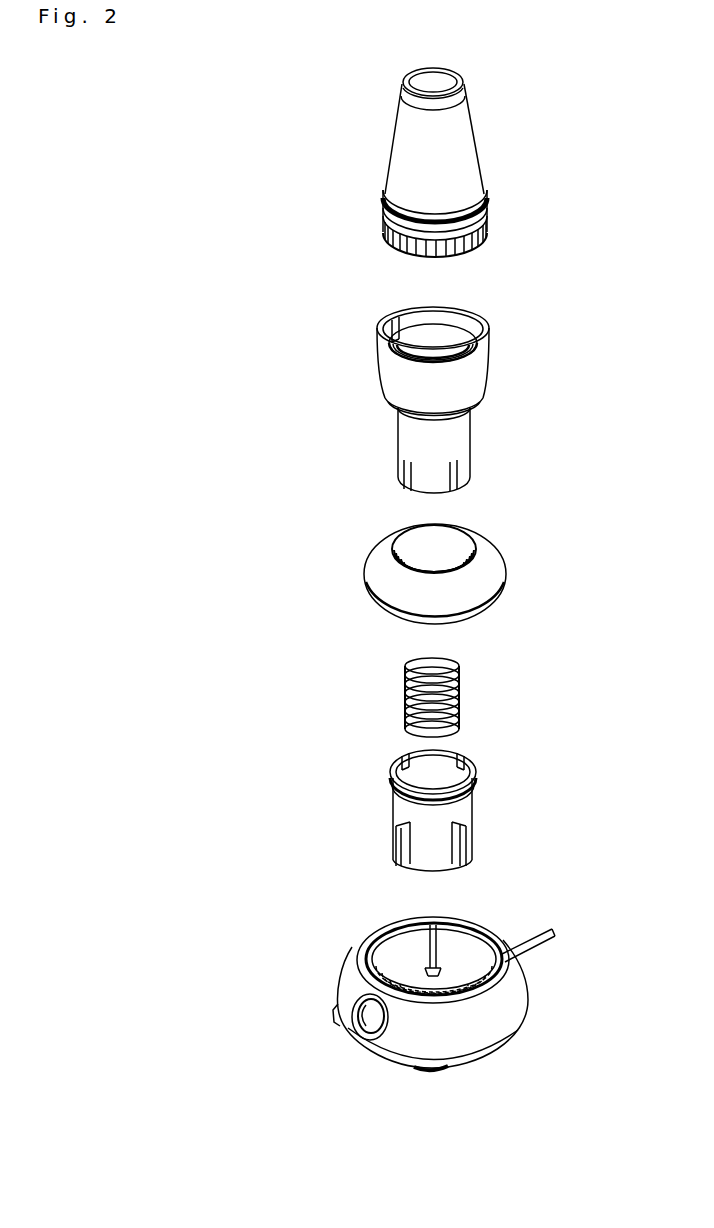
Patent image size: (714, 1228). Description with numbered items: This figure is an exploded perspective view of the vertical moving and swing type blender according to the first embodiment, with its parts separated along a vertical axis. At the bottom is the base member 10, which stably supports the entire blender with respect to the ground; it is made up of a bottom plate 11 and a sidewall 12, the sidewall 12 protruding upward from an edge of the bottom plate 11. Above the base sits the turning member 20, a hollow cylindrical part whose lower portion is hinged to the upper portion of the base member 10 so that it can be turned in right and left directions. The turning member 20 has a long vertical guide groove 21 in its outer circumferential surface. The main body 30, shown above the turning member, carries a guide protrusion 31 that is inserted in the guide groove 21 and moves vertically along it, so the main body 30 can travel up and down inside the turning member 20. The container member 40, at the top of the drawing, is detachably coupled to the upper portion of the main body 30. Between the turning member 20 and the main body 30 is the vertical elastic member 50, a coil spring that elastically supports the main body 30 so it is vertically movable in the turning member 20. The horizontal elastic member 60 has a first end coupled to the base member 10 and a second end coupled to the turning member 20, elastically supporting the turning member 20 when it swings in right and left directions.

The base member 10 is at (481, 993).
The bottom plate 11 is at (506, 978).
The sidewall 12 is at (490, 1040).
The turning member 20 is at (468, 812).
The guide groove 21 is at (466, 845).
The main body 30 is at (468, 407).
The guide protrusion 31 is at (466, 489).
The container member 40 is at (465, 157).
The vertical elastic member 50 is at (459, 692).
The horizontal elastic member 60 is at (378, 562).